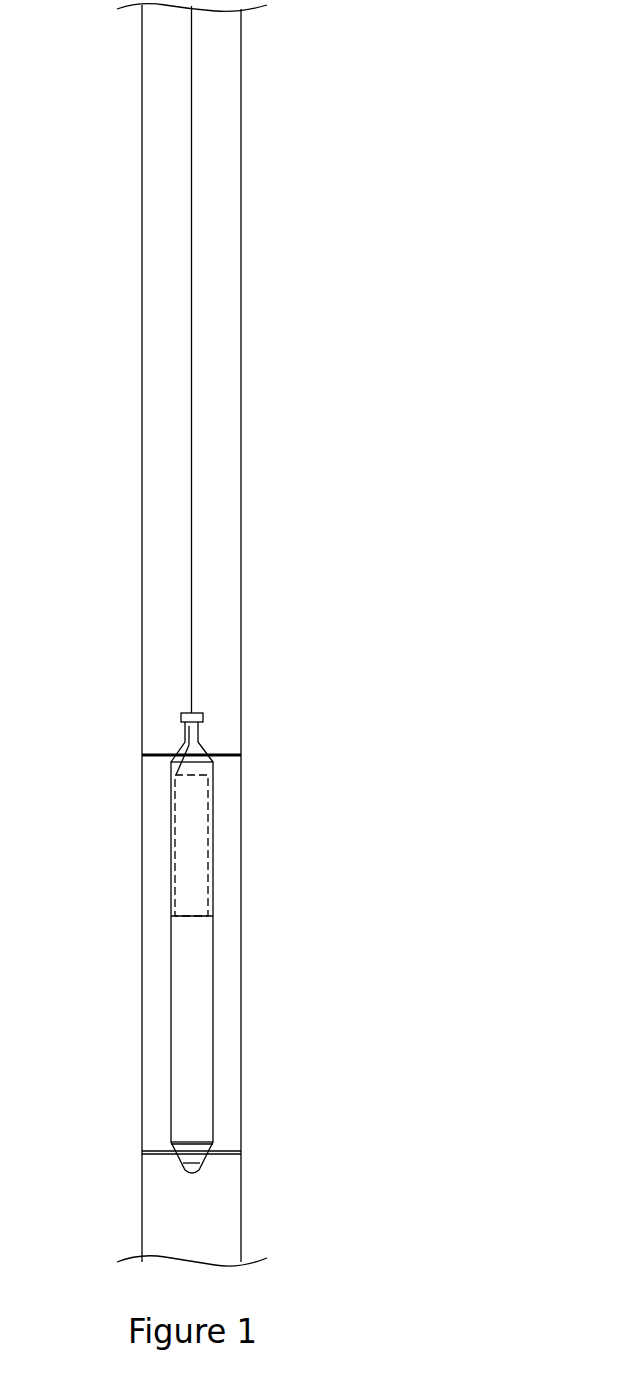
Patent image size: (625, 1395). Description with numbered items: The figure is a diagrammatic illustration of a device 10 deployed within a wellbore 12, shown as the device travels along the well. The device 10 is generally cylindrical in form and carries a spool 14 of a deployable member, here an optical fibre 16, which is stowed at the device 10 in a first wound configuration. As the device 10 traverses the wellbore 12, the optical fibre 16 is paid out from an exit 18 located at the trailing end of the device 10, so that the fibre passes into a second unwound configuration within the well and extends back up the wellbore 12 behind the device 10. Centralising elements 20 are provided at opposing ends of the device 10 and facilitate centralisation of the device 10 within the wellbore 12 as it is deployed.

The device 10 is at (190, 1008).
The wellbore 12 is at (241, 133).
The spool 14 is at (192, 850).
The optical fibre 16 is at (191, 308).
The exit 18 is at (185, 722).
The centralising elements 20 is at (241, 755).